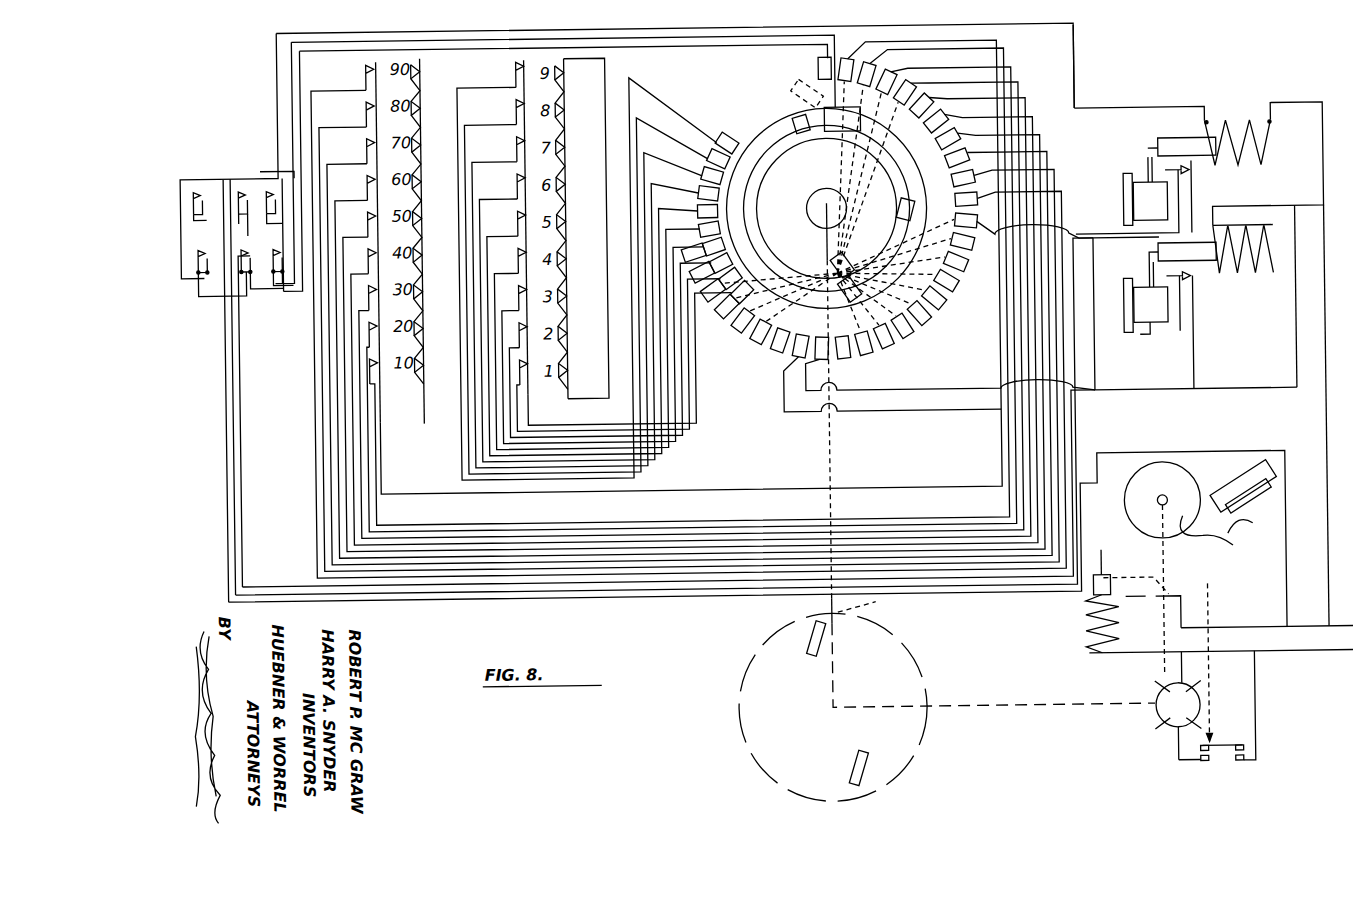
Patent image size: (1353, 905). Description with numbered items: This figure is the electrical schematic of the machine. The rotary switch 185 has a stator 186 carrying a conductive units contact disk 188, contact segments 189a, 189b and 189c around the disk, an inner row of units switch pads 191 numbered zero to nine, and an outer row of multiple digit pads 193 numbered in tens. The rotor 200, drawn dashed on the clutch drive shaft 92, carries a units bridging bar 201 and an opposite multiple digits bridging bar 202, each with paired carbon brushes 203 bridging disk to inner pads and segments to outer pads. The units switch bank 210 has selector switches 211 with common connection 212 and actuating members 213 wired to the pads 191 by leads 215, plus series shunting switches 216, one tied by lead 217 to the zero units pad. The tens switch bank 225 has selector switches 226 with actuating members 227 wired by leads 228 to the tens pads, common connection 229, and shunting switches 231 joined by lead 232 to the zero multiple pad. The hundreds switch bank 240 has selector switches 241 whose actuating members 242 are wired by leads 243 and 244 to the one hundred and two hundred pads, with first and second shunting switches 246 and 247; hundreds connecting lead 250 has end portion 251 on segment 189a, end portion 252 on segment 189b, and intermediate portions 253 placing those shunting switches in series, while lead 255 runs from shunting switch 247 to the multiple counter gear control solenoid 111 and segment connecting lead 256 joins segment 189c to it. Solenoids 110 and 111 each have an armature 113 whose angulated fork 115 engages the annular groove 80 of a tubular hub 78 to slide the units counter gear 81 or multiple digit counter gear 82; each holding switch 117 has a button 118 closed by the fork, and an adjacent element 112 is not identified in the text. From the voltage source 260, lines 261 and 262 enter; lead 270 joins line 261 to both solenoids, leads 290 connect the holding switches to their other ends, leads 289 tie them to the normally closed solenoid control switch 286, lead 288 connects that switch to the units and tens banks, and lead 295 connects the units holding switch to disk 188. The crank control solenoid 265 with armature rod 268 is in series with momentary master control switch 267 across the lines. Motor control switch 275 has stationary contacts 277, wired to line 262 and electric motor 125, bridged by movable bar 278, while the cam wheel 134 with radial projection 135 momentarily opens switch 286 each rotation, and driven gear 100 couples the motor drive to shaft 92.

The hundreds connecting lead 250 is at (278, 53).
The multiple solenoid connecting lead 255 is at (1078, 45).
The lead 244 is at (232, 530).
The lead 243 is at (239, 498).
The end portion 251 is at (838, 60).
The hundreds switch bank 240 is at (255, 320).
The actuating members 242 is at (240, 218).
The intermediate switch connected portions 253 is at (192, 200).
The second shunting switch 247 is at (290, 210).
The selector switches 241 is at (232, 210).
The first shunting switch 246 is at (200, 265).
The driven gear 100 is at (206, 317).
The leads 228 is at (350, 525).
The selector switches 226 is at (364, 76).
The actuating members 227 is at (369, 130).
The tens switch bank 225 is at (418, 392).
The common connection 229 is at (396, 196).
The shunting switches 231 is at (428, 106).
The leads 215 is at (598, 460).
The selector switches 211 is at (512, 78).
The actuating members 213 is at (515, 135).
The units switch bank 210 is at (605, 470).
The shunting switches 216 is at (575, 104).
The common connection 212 is at (568, 240).
The lead 217 is at (608, 278).
The lead 232 is at (648, 40).
The units contact disk 188 is at (830, 155).
The contact segment 189c is at (790, 205).
The contact segment 189a is at (846, 119).
The contact segment 189b is at (902, 218).
The units bridging bar 201 is at (826, 246).
The stator 186 is at (757, 336).
The units switch pads 191 is at (735, 128).
The carbon brushes 203 is at (808, 116).
The multiple digits bridging bar 202 is at (786, 90).
The multiple digit pads 193 is at (816, 66).
The end portion 252 is at (950, 305).
The lead 295 is at (970, 405).
The segment connecting lead 256 is at (958, 420).
The lead 288 is at (790, 490).
The drive shaft 92 is at (1000, 712).
The rotor 200 is at (905, 652).
The rotary switch 185 is at (812, 602).
The multiple digit counter gear 82 is at (1124, 210).
The armature 113 is at (1182, 140).
The angulated fork 115 is at (1160, 163).
The button 118 is at (1130, 125).
The holding switch 117 is at (1200, 190).
The multiple counter gear control solenoid 111 is at (1245, 118).
The conductor 112 is at (1262, 165).
The leads 290 is at (1077, 168).
The units counter gear control solenoid 110 is at (1252, 280).
The units counter gear 81 is at (1124, 300).
The annular groove 80 is at (1152, 328).
The tubular hubs 78 is at (1150, 240).
The leads 289 is at (1094, 360).
The lead 270 is at (1325, 435).
The cam wheel 134 is at (1128, 500).
The solenoid control switch 286 is at (1243, 487).
The radial projection 135 is at (1227, 545).
The armature rod 268 is at (1098, 565).
The crank control solenoid 265 is at (1082, 636).
The master control switch 267 is at (1145, 590).
The electrical line 261 is at (1236, 630).
The source of electrical voltage 260 is at (1221, 667).
The electrical line 262 is at (1255, 660).
The electric motor 125 is at (1150, 722).
The movable bridging contact 278 is at (1208, 740).
The motor control switch 275 is at (1197, 768).
The stationary contacts 277 is at (1236, 768).